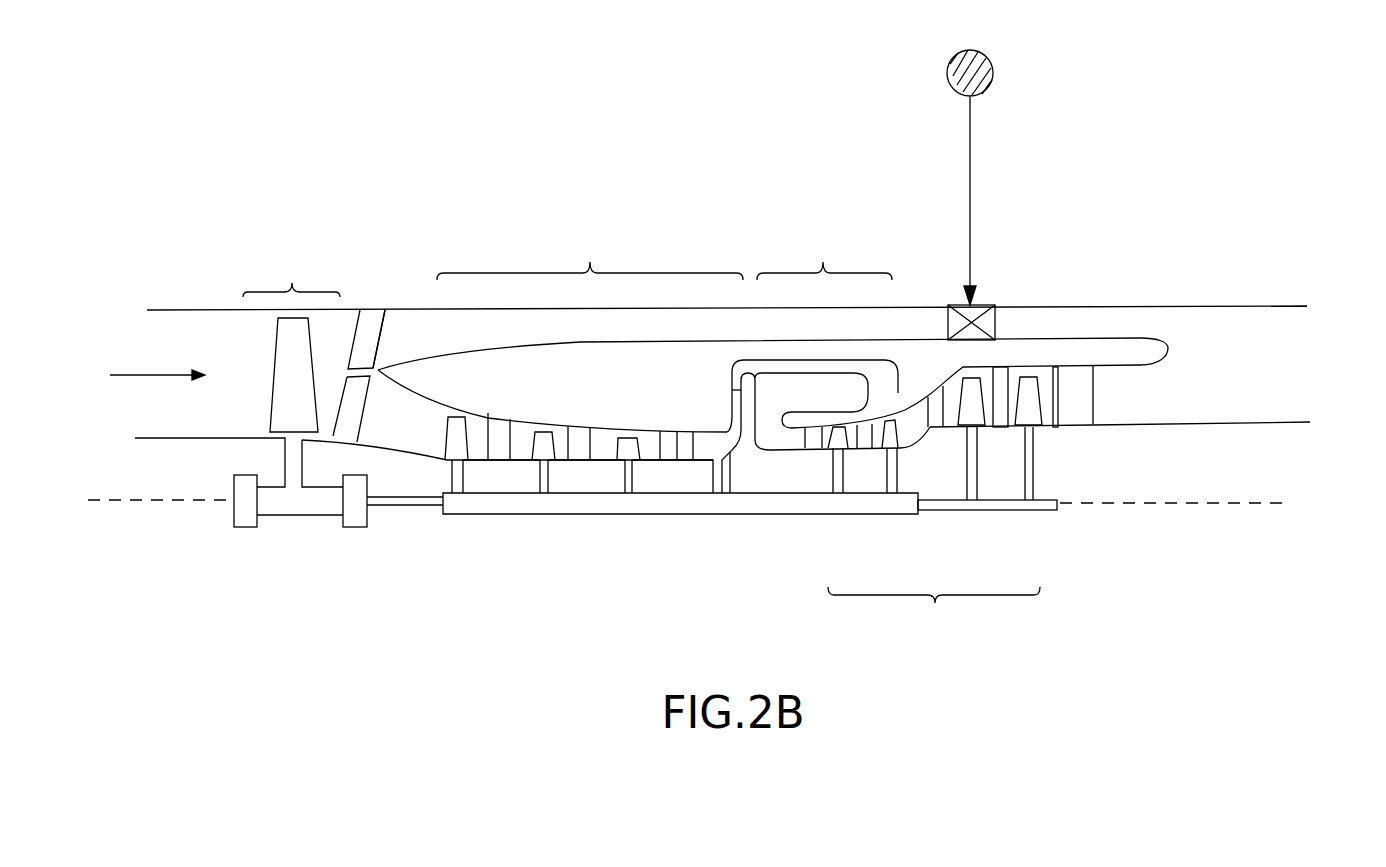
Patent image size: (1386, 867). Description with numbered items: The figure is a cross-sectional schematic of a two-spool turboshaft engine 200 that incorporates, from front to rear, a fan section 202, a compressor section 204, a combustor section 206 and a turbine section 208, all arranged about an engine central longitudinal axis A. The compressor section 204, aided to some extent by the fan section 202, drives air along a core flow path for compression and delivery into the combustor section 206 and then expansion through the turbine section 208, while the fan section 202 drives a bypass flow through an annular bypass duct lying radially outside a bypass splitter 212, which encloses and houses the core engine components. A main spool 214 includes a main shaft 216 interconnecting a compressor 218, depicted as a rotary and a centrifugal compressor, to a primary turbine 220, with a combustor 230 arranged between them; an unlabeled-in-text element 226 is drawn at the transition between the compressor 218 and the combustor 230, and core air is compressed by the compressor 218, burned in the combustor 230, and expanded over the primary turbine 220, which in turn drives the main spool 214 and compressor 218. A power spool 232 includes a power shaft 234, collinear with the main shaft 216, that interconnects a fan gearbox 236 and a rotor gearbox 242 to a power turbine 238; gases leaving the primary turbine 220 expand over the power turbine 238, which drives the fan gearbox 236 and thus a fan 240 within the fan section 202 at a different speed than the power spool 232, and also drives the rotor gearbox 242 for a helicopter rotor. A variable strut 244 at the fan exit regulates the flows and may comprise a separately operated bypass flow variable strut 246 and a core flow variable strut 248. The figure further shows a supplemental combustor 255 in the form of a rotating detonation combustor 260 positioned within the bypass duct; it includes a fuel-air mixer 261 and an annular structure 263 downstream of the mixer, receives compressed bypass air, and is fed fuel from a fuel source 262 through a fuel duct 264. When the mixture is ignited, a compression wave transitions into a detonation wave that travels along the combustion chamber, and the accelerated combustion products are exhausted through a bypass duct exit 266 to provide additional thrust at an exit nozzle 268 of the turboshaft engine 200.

The turboshaft engine 200 is at (173, 175).
The fan section 202 is at (291, 276).
The compressor section 204 is at (590, 347).
The combustor section 206 is at (812, 332).
The turbine section 208 is at (1069, 501).
The bypass splitter 212 is at (582, 396).
The main spool 214 is at (648, 502).
The main shaft 216 is at (522, 502).
The compressor 218 is at (570, 472).
The primary turbine 220 is at (907, 452).
The diffuser 226 is at (732, 463).
The combustor 230 is at (807, 401).
The power spool 232 is at (1013, 503).
The power shaft 234 is at (402, 502).
The fan gearbox 236 is at (353, 512).
The power turbine 238 is at (1043, 438).
The fan 240 is at (285, 402).
The rotor gearbox 242 is at (242, 510).
The variable strut 244 is at (365, 330).
The bypass flow variable strut 246 is at (367, 343).
The core flow variable strut 248 is at (357, 402).
The supplemental combustor 255 is at (955, 287).
The rotating detonation combustor 260 is at (995, 283).
The fuel-air mixer 261 is at (955, 323).
The fuel source 262 is at (992, 60).
The annular structure 263 is at (983, 323).
The fuel duct 264 is at (972, 142).
The bypass duct exit 266 is at (1157, 332).
The exit nozzle 268 is at (1308, 353).
The engine central longitudinal axis A is at (1197, 507).